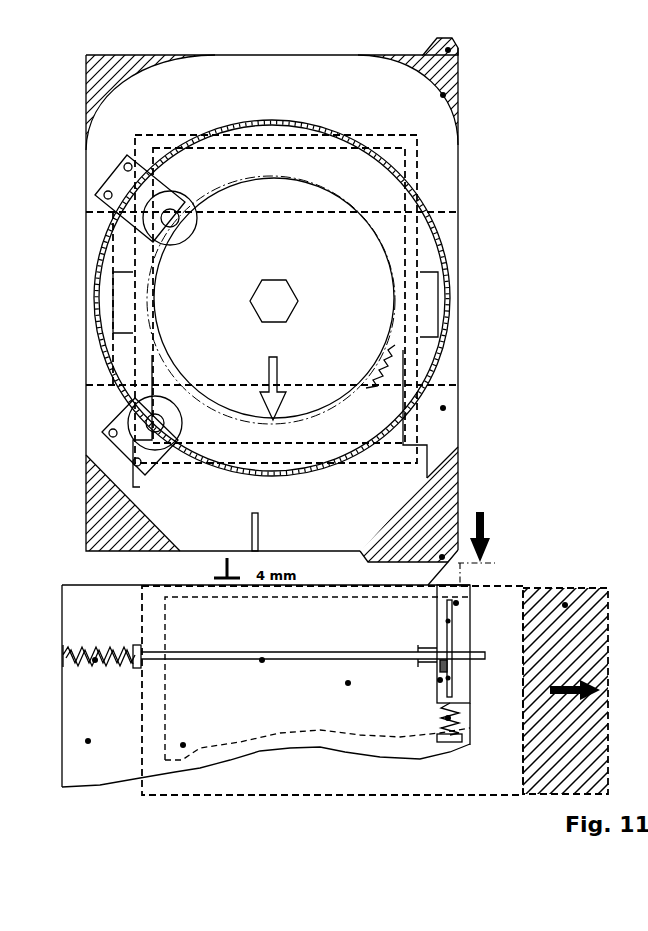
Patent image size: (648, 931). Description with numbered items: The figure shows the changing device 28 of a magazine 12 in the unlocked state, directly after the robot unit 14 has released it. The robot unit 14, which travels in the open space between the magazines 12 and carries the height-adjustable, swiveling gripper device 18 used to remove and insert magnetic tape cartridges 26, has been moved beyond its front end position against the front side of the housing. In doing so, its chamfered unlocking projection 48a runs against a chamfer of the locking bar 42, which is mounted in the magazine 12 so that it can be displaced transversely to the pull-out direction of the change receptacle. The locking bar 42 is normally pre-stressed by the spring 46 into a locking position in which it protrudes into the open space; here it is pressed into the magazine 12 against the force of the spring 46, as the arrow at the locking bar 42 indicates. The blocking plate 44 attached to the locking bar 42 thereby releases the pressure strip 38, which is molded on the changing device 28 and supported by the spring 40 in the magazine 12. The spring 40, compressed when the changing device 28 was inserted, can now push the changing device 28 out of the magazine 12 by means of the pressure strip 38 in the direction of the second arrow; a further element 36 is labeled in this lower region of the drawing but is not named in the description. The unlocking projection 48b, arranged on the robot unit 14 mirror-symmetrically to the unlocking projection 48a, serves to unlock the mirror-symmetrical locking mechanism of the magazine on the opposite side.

The magazine 12 is at (88, 741).
The robot unit 14 is at (445, 95).
The gripper device 18 is at (443, 408).
The magnetic tape cartridge 26 is at (183, 745).
The changing device 28 is at (565, 605).
The carriage 36 is at (348, 683).
The pressure strip 38 is at (262, 660).
The spring 40 is at (95, 660).
The locking bar 42 is at (456, 603).
The blocking plate 44 is at (440, 680).
The spring 46 is at (448, 718).
The unlocking projection 48a is at (442, 557).
The unlocking projection 48b is at (450, 50).